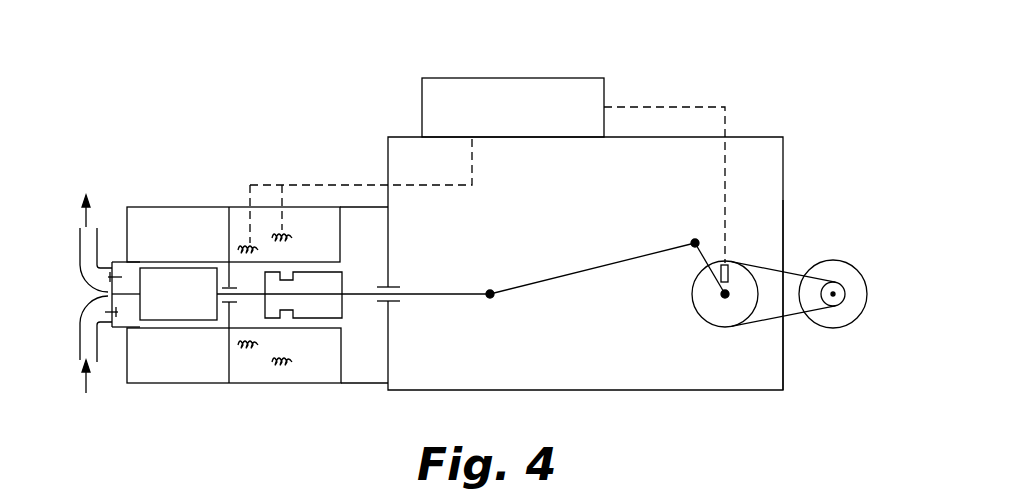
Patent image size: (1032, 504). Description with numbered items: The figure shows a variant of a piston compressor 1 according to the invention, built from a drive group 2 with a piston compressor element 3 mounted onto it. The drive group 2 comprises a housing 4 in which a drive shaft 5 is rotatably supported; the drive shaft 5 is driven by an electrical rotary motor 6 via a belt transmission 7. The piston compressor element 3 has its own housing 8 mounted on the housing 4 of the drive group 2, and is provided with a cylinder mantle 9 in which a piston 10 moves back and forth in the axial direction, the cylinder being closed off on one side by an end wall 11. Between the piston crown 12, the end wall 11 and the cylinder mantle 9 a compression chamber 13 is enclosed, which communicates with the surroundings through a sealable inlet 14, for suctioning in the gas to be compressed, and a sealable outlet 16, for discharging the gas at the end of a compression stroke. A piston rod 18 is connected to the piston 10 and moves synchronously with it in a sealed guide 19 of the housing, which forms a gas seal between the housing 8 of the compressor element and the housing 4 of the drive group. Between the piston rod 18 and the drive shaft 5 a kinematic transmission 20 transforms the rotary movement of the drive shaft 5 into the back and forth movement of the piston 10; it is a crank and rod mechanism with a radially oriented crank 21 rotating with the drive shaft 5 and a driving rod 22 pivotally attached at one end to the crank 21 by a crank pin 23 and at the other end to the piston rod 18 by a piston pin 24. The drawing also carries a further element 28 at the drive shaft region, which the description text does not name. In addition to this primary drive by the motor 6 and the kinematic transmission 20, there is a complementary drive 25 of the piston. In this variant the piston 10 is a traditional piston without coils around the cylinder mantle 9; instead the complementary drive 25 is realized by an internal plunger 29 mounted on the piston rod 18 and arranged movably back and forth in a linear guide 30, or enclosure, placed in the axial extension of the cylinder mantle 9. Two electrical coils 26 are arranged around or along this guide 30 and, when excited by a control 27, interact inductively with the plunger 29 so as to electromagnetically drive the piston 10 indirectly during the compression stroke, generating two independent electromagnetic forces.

The piston compressor 1 is at (830, 128).
The drive group 2 is at (788, 173).
The piston compressor element 3 is at (160, 240).
The housing 4 is at (785, 360).
The drive shaft 5 is at (738, 262).
The electrical rotary motor 6 is at (848, 309).
The belt transmission 7 is at (758, 323).
The housing 8 is at (152, 383).
The cylinder mantle 9 is at (216, 322).
The piston 10 is at (192, 268).
The end wall 11 is at (110, 295).
The piston crown 12 is at (135, 306).
The compression chamber 13 is at (252, 308).
The sealable inlet 14 is at (78, 348).
The sealable outlet 16 is at (79, 233).
The piston rod 18 is at (465, 293).
The sealed guide 19 is at (222, 287).
The kinematic transmission 20 is at (645, 301).
The crank 21 is at (703, 322).
The driving rod 22 is at (628, 250).
The crank pin 23 is at (693, 247).
The piston pin 24 is at (490, 298).
The complementary drive 25 is at (272, 163).
The electrical coils 26 is at (282, 365).
The control 27 is at (438, 93).
The crankshaft 28 is at (735, 265).
The internal plunger 29 is at (318, 320).
The linear guide 30 is at (318, 262).